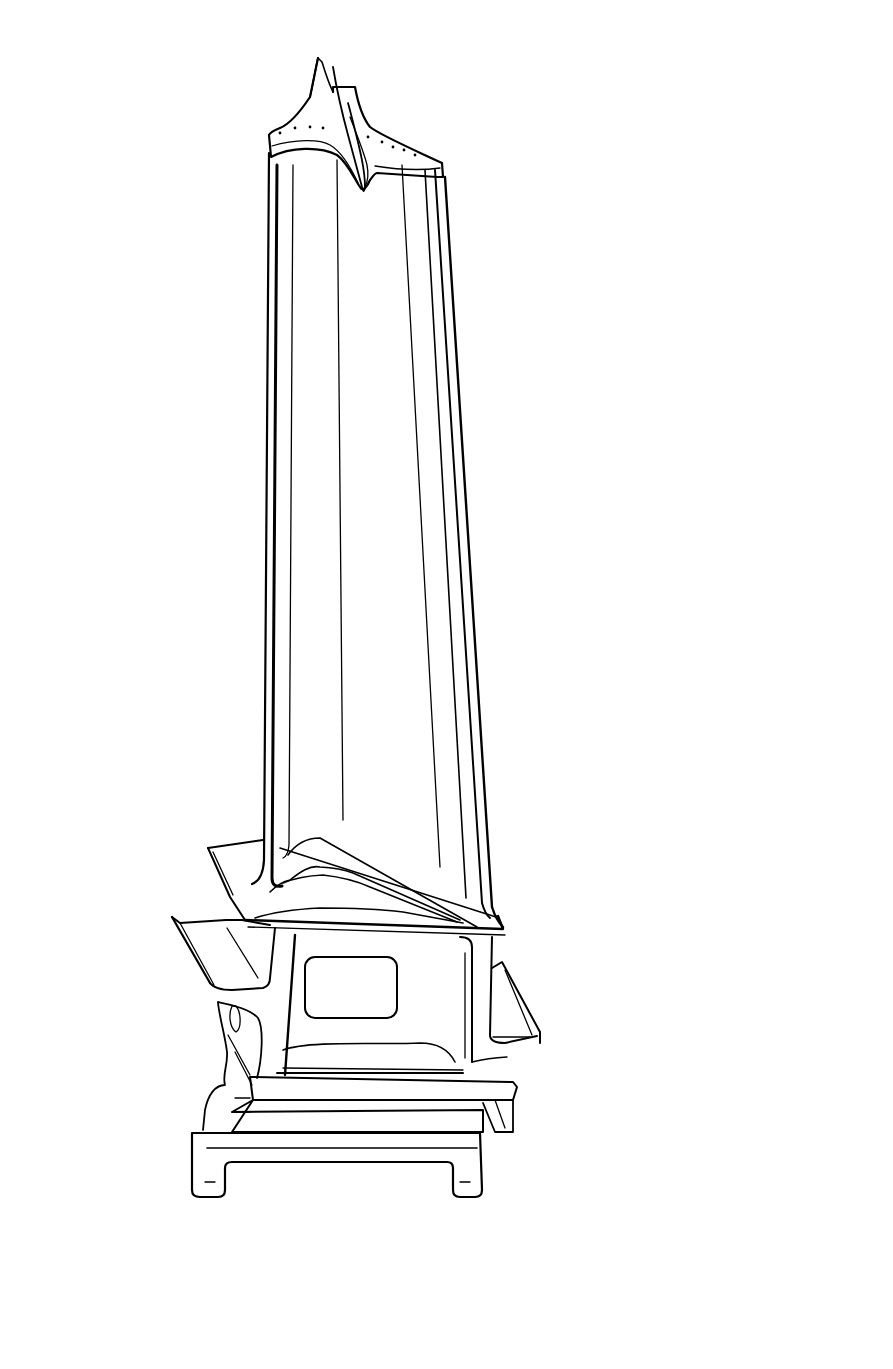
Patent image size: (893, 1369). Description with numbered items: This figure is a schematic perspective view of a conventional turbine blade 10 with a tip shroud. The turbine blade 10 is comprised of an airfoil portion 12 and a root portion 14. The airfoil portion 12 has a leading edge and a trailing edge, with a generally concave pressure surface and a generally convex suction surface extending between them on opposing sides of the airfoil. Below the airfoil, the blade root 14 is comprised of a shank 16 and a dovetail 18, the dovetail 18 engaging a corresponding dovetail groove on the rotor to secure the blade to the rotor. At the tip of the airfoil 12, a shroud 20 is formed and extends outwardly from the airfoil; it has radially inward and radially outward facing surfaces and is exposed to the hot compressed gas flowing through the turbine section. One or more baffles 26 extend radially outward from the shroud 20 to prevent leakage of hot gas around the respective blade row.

The turbine blade 10 is at (648, 483).
The airfoil portion 12 is at (515, 662).
The root portion 14 is at (570, 966).
The shank 16 is at (160, 1000).
The dovetail 18 is at (160, 1158).
The shroud 20 is at (447, 120).
The baffle 26 is at (322, 68).